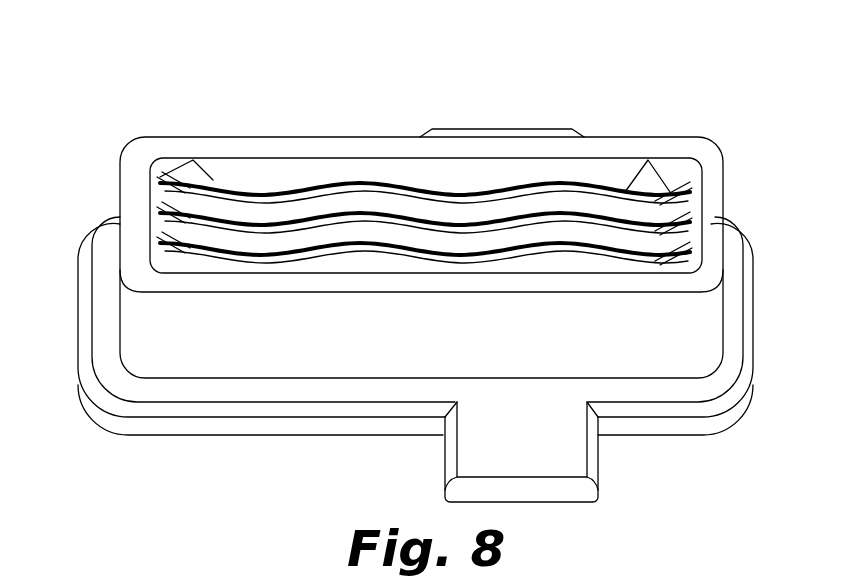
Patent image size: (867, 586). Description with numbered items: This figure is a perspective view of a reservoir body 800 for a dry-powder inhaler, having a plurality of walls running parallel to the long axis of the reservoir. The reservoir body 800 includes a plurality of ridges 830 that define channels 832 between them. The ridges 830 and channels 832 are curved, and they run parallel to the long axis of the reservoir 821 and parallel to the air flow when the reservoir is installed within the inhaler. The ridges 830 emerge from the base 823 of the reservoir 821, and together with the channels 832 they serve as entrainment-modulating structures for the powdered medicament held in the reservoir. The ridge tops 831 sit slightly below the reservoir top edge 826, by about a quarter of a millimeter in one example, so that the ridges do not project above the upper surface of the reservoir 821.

The reservoir body 800 is at (716, 90).
The reservoir 821 is at (528, 162).
The base 823 is at (692, 172).
The reservoir top edge 826 is at (142, 157).
The ridges 830 is at (310, 260).
The ridge tops 831 is at (448, 247).
The channels 832 is at (210, 257).